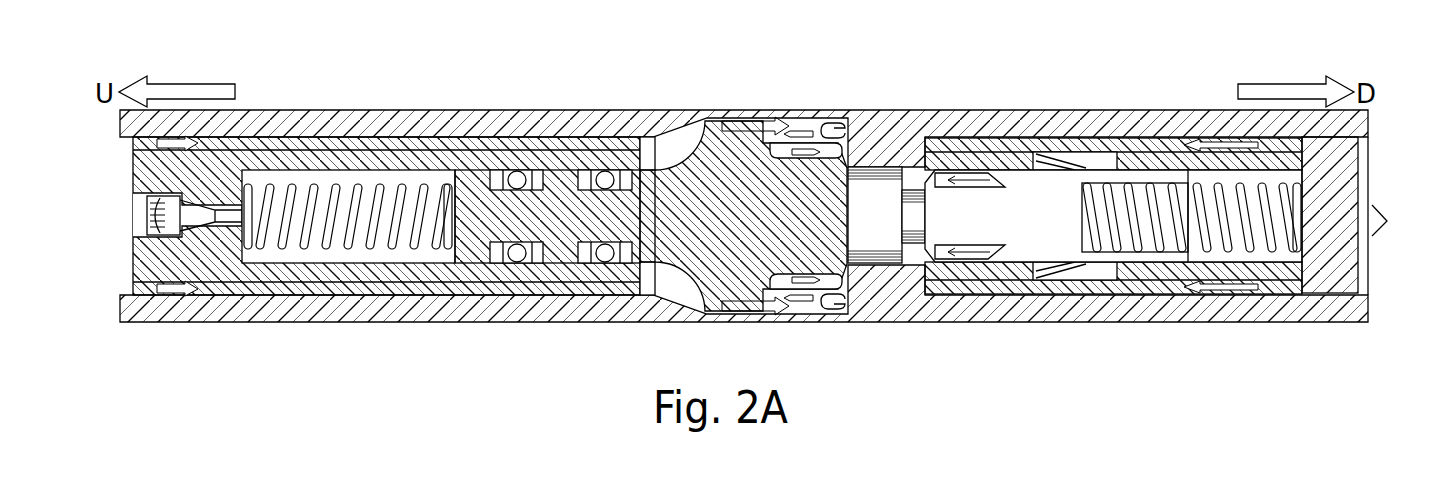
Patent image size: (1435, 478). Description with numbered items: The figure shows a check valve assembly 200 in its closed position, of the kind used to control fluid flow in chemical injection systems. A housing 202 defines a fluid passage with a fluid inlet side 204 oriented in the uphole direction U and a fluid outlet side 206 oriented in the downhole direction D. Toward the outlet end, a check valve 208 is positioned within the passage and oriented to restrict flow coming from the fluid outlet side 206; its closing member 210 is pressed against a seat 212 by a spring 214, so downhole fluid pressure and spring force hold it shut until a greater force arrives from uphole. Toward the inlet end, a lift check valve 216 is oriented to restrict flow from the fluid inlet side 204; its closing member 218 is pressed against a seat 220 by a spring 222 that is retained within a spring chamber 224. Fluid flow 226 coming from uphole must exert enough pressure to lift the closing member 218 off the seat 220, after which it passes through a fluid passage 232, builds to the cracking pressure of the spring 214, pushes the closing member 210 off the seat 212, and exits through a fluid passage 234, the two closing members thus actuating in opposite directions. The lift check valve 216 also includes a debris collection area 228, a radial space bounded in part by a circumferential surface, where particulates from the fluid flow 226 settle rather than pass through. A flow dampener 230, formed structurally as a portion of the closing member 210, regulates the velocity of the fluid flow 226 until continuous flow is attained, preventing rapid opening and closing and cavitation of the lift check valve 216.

The check valve assembly 200 is at (1150, 44).
The housing 202 is at (527, 108).
The fluid inlet side 204 is at (118, 210).
The fluid outlet side 206 is at (1358, 178).
The check valve 208 is at (993, 287).
The closing member 210 is at (1060, 247).
The seat 212 is at (920, 248).
The spring 214 is at (1273, 250).
The lift check valve 216 is at (155, 262).
The closing member 218 is at (707, 243).
The seat 220 is at (843, 290).
The spring 222 is at (415, 252).
The spring chamber 224 is at (318, 253).
The fluid flow 226 is at (133, 143).
The debris collection area 228 is at (817, 125).
The flow dampener 230 is at (1017, 183).
The fluid passage 232 is at (846, 167).
The fluid passage 234 is at (925, 187).